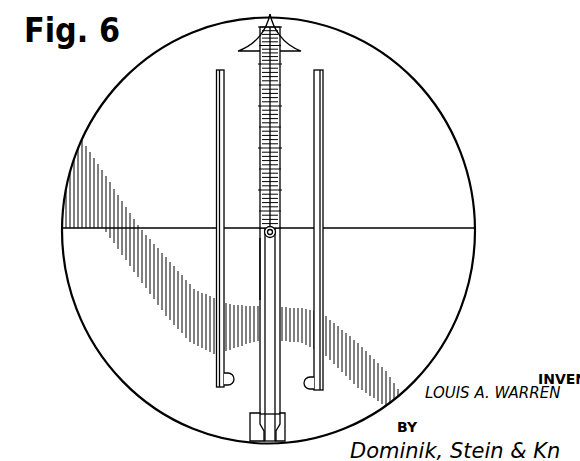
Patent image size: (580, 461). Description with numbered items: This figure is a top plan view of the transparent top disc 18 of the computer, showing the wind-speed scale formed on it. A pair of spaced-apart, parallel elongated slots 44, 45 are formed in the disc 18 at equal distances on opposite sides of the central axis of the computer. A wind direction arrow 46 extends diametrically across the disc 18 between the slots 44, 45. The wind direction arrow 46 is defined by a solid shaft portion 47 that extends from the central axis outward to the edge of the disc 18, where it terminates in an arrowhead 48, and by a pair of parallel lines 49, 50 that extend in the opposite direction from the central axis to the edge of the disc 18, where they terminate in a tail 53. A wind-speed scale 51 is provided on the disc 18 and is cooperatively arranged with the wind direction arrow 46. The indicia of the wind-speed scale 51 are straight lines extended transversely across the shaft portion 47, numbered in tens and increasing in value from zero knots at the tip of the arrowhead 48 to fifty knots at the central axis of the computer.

The disc 18 is at (446, 106).
The elongated slot 44 is at (216, 131).
The elongated slot 45 is at (323, 126).
The wind direction arrow 46 is at (288, 294).
The shaft portion 47 is at (281, 208).
The arrowhead 48 is at (303, 50).
The parallel line 49 is at (277, 267).
The parallel line 50 is at (260, 250).
The wind-speed scale 51 is at (285, 95).
The tail 53 is at (250, 427).